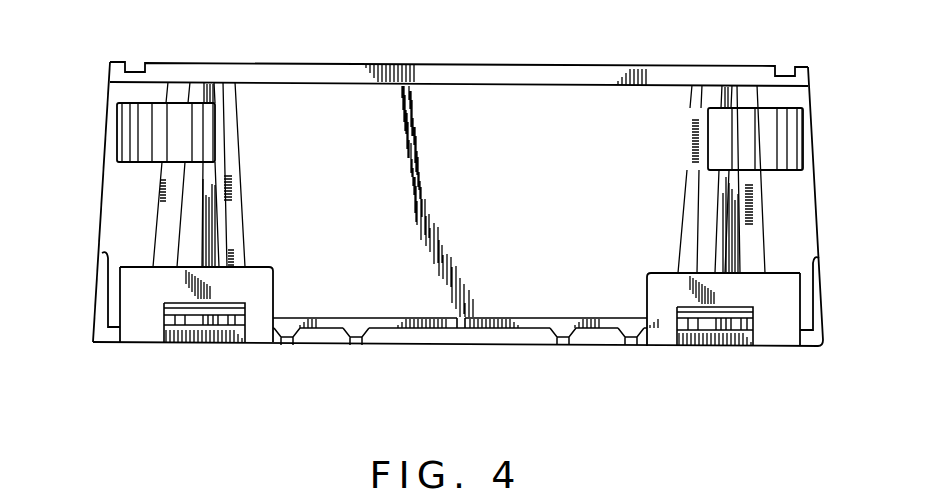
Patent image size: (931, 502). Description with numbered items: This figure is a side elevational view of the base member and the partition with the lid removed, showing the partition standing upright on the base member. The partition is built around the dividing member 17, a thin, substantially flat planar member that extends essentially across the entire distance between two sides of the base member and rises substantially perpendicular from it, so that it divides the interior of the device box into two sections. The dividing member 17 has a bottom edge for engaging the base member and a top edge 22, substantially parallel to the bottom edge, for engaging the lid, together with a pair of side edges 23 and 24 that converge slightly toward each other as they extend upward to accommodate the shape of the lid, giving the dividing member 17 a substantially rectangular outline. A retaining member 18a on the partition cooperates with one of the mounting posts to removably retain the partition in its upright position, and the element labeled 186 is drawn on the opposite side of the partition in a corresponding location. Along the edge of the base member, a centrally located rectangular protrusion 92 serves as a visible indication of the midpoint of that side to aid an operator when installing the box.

The top edge 22 is at (688, 65).
The dividing member 17 is at (488, 174).
The retaining member 18a is at (112, 146).
The bearing block 186 is at (814, 132).
The side edge 23 is at (102, 197).
The side edge 24 is at (817, 190).
The rectangular protrusion 92 is at (460, 323).